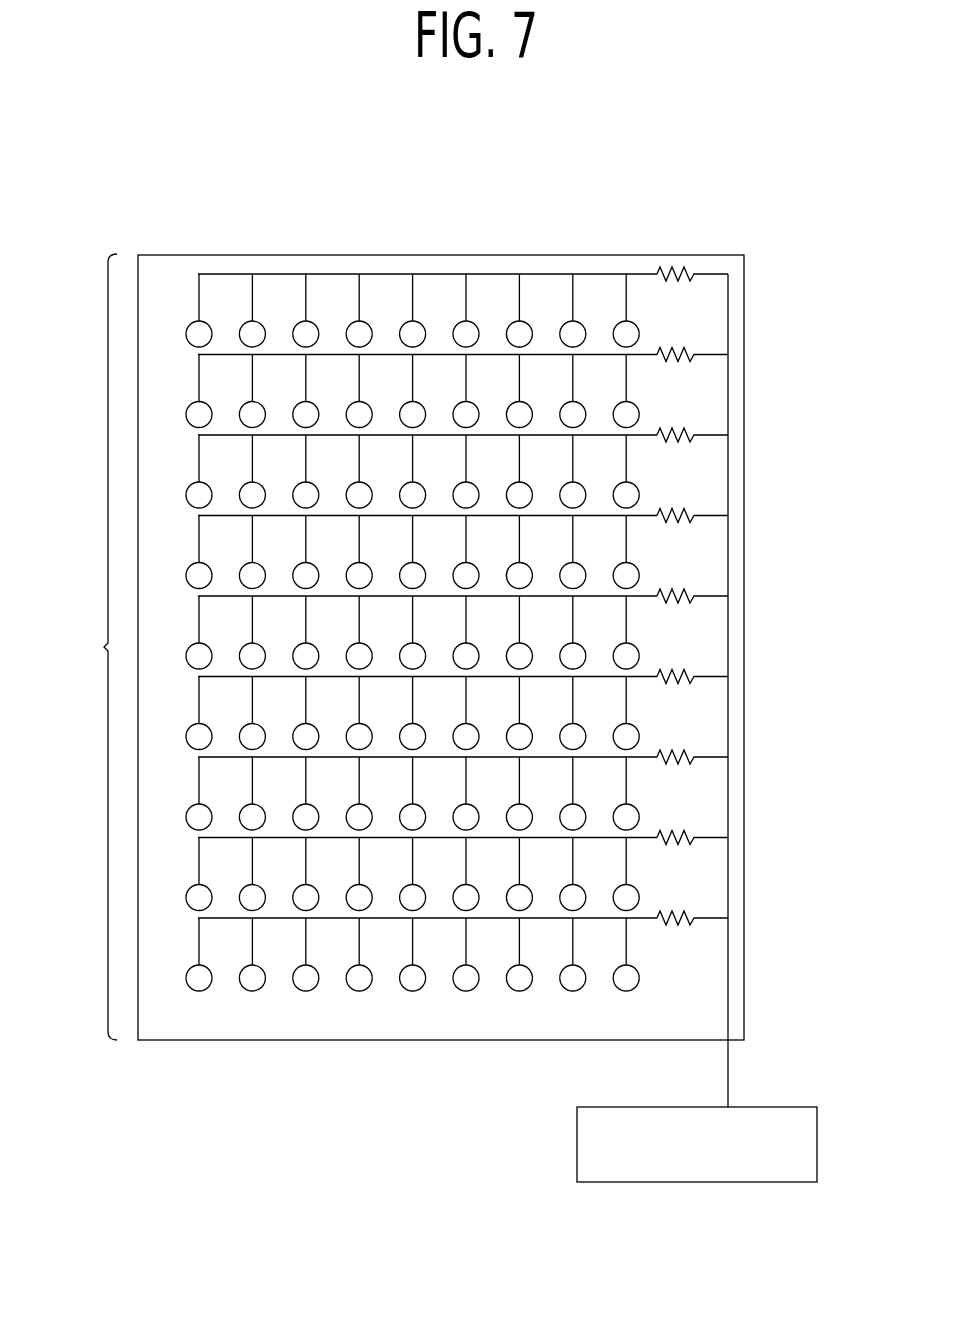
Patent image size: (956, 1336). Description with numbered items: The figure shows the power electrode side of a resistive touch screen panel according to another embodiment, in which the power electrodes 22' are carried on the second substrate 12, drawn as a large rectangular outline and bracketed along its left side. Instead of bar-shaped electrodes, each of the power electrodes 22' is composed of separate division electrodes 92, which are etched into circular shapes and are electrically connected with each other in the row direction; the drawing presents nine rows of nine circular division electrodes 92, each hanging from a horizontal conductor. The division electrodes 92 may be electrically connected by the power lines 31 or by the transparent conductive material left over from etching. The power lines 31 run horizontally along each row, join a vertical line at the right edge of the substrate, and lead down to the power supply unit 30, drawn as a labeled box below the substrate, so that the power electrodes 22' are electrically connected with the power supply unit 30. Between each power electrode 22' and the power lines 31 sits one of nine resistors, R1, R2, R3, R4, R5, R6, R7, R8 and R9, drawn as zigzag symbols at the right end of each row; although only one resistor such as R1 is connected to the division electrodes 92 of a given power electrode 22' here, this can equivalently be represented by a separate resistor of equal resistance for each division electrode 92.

The second substrate 12 is at (744, 1018).
The power electrodes 22' is at (88, 647).
The power supply unit 30 is at (693, 1182).
The power lines 31 is at (325, 273).
The division electrodes 92 is at (187, 333).
The resistor R1 is at (677, 291).
The resistor R2 is at (677, 372).
The resistor R3 is at (677, 452).
The resistor R4 is at (677, 533).
The resistor R5 is at (677, 613).
The resistor R6 is at (677, 694).
The resistor R7 is at (677, 774).
The resistor R8 is at (677, 855).
The resistor R9 is at (677, 935).